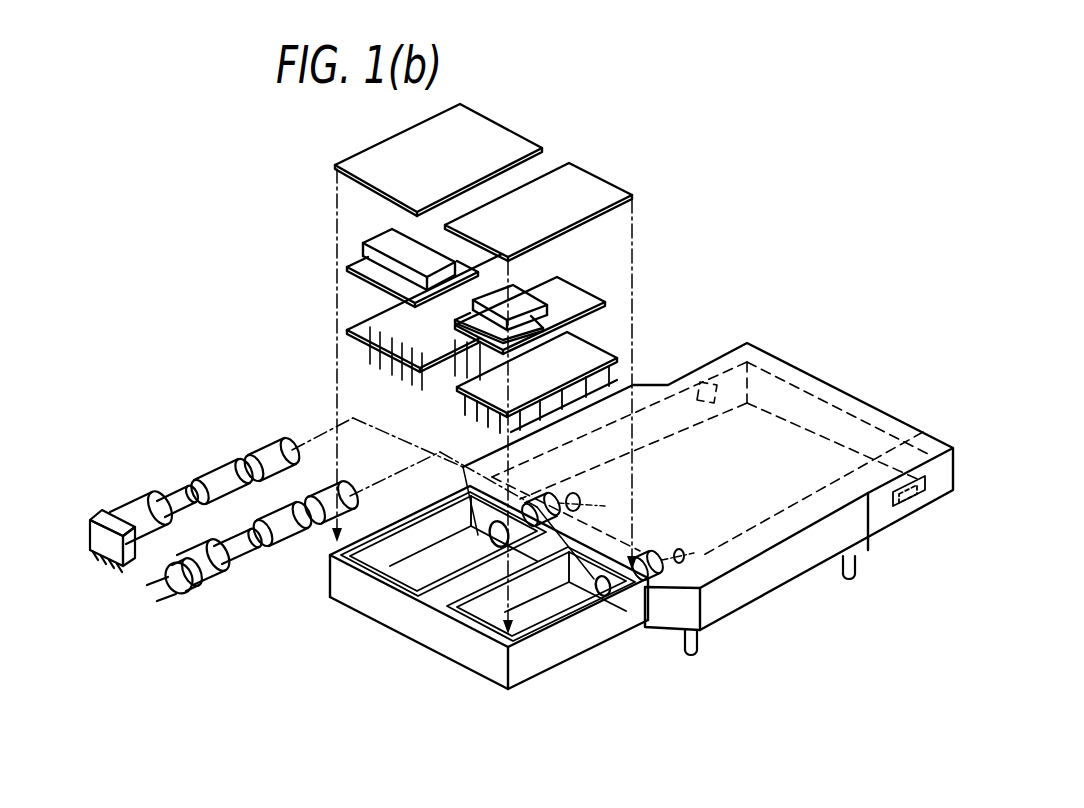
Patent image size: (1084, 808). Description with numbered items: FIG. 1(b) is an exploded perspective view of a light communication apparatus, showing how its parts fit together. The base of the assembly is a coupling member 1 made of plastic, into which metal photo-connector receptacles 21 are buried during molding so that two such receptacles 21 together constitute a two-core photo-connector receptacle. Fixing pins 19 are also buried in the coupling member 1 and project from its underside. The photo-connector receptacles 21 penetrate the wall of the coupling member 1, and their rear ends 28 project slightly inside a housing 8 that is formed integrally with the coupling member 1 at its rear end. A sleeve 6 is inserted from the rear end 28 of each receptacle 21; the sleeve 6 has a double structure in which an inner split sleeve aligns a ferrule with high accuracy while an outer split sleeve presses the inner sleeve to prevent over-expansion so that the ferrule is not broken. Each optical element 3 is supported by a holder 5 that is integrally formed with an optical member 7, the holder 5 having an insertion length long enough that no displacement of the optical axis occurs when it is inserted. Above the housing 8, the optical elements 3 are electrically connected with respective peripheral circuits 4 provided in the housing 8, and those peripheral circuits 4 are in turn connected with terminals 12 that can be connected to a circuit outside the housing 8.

The coupling member 1 is at (745, 592).
The optical element 3 is at (108, 512).
The peripheral circuit 4 is at (390, 246).
The holder 5 is at (138, 506).
The sleeve 6 is at (268, 455).
The optical member 7 is at (182, 490).
The housing 8 is at (538, 660).
The terminals 12 is at (353, 328).
The fixing pins 19 is at (698, 655).
The photo-connector receptacle 21 is at (612, 499).
The rear end 28 is at (492, 547).